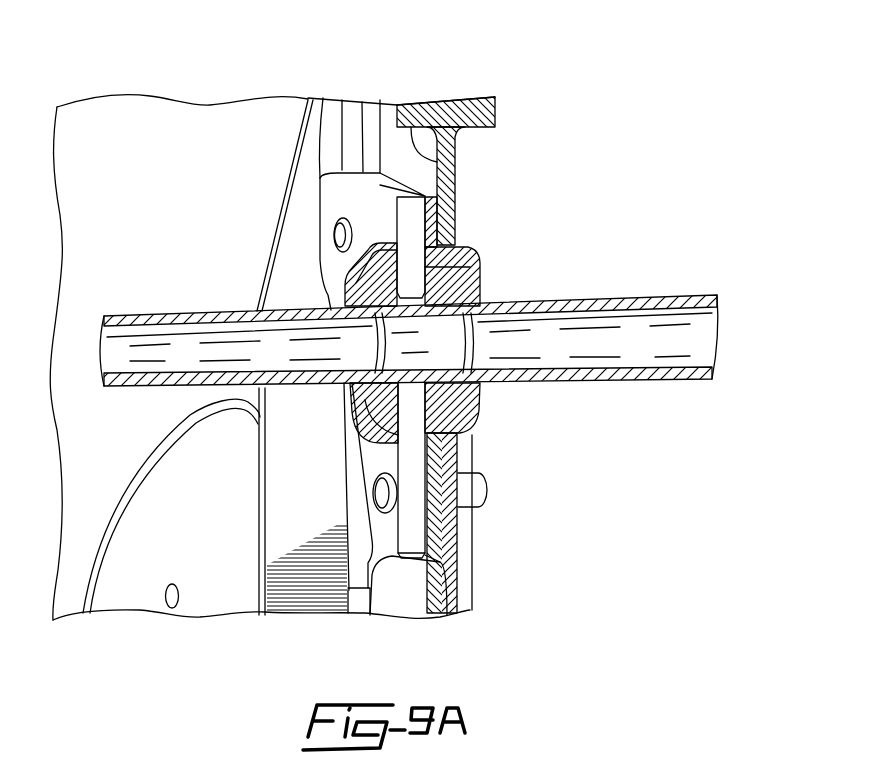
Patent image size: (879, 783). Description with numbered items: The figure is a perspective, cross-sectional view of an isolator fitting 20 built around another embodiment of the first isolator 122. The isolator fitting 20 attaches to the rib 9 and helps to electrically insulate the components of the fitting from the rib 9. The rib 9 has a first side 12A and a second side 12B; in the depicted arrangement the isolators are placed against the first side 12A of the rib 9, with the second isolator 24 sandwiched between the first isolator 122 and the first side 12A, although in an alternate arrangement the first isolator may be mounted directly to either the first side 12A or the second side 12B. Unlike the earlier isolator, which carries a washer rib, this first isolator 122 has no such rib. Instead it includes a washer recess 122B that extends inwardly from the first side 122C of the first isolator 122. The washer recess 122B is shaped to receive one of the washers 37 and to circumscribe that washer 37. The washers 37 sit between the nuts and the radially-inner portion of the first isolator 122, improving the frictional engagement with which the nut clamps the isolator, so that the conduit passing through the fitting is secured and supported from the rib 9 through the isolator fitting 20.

The rib 9 is at (457, 107).
The first side 12A is at (415, 117).
The second side 12B is at (457, 175).
The isolator fitting 20 is at (301, 244).
The second isolator 24 is at (436, 568).
The washer 37 is at (376, 253).
The first isolator 122 is at (308, 198).
The washer recess 122B is at (398, 427).
The first side 122C is at (388, 532).